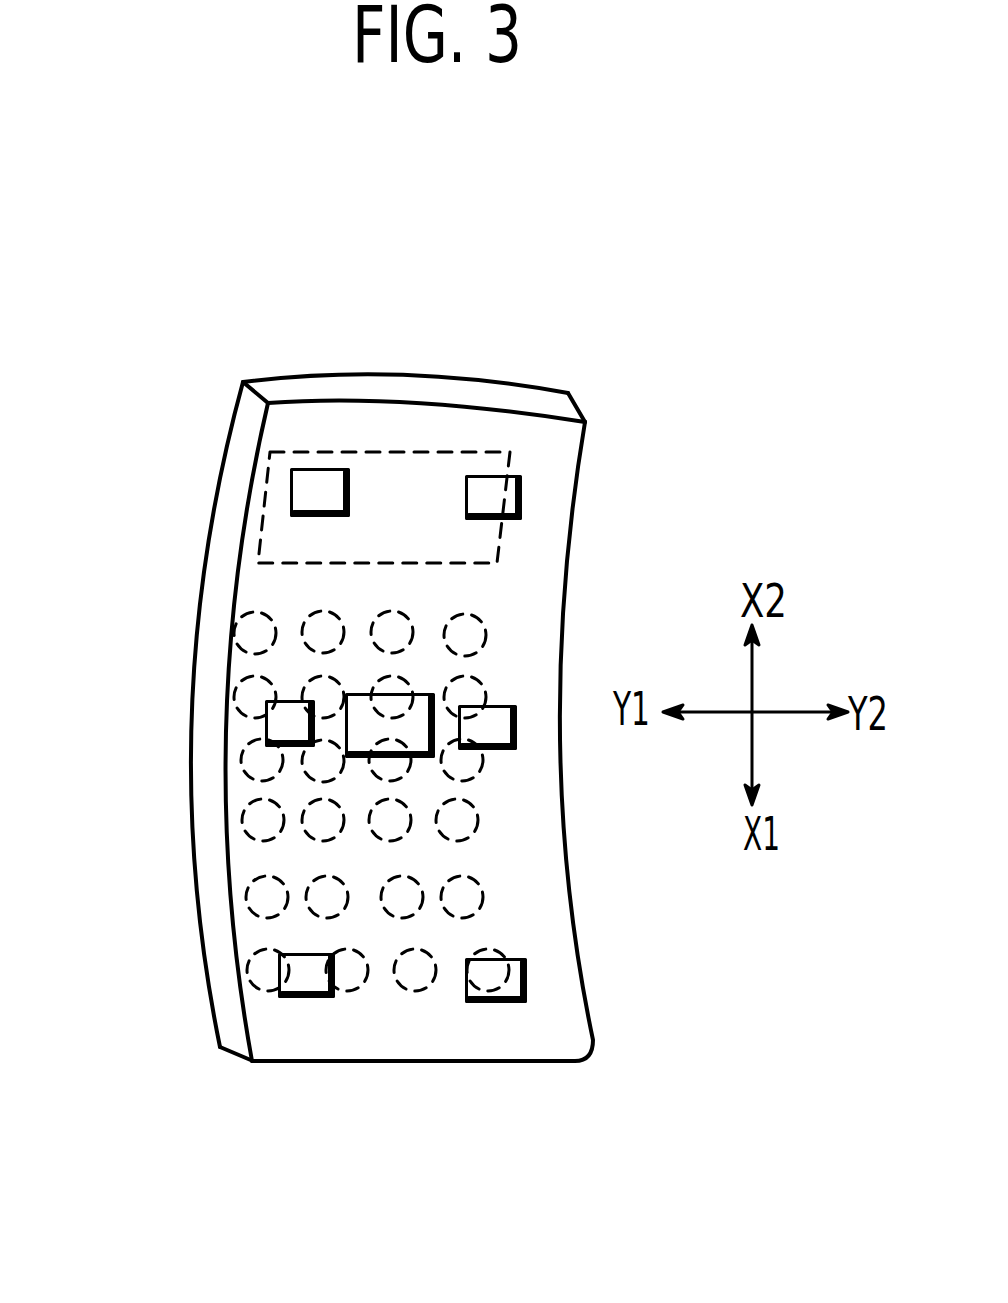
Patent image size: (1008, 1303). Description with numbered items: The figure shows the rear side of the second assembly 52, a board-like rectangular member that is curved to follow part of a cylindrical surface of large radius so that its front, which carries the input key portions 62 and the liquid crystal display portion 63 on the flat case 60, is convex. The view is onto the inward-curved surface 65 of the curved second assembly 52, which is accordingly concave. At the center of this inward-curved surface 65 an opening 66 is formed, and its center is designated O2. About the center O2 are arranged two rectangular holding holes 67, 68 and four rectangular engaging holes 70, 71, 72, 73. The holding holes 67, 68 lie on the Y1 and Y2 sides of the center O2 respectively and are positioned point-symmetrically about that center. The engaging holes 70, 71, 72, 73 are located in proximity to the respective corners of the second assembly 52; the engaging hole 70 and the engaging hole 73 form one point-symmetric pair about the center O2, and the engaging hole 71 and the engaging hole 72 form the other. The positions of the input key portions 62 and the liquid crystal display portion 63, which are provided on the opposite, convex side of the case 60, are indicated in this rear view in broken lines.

The second assembly 52 is at (575, 285).
The case 60 is at (197, 640).
The input key portions 62 is at (247, 833).
The liquid crystal display portion 63 is at (265, 533).
The inward-curved surface 65 is at (443, 1038).
The opening 66 is at (413, 720).
The holding hole 67 is at (270, 726).
The holding hole 68 is at (517, 730).
The engaging hole 70 is at (297, 485).
The engaging hole 71 is at (513, 493).
The engaging hole 72 is at (297, 980).
The engaging hole 73 is at (512, 992).
The center O2 is at (387, 723).